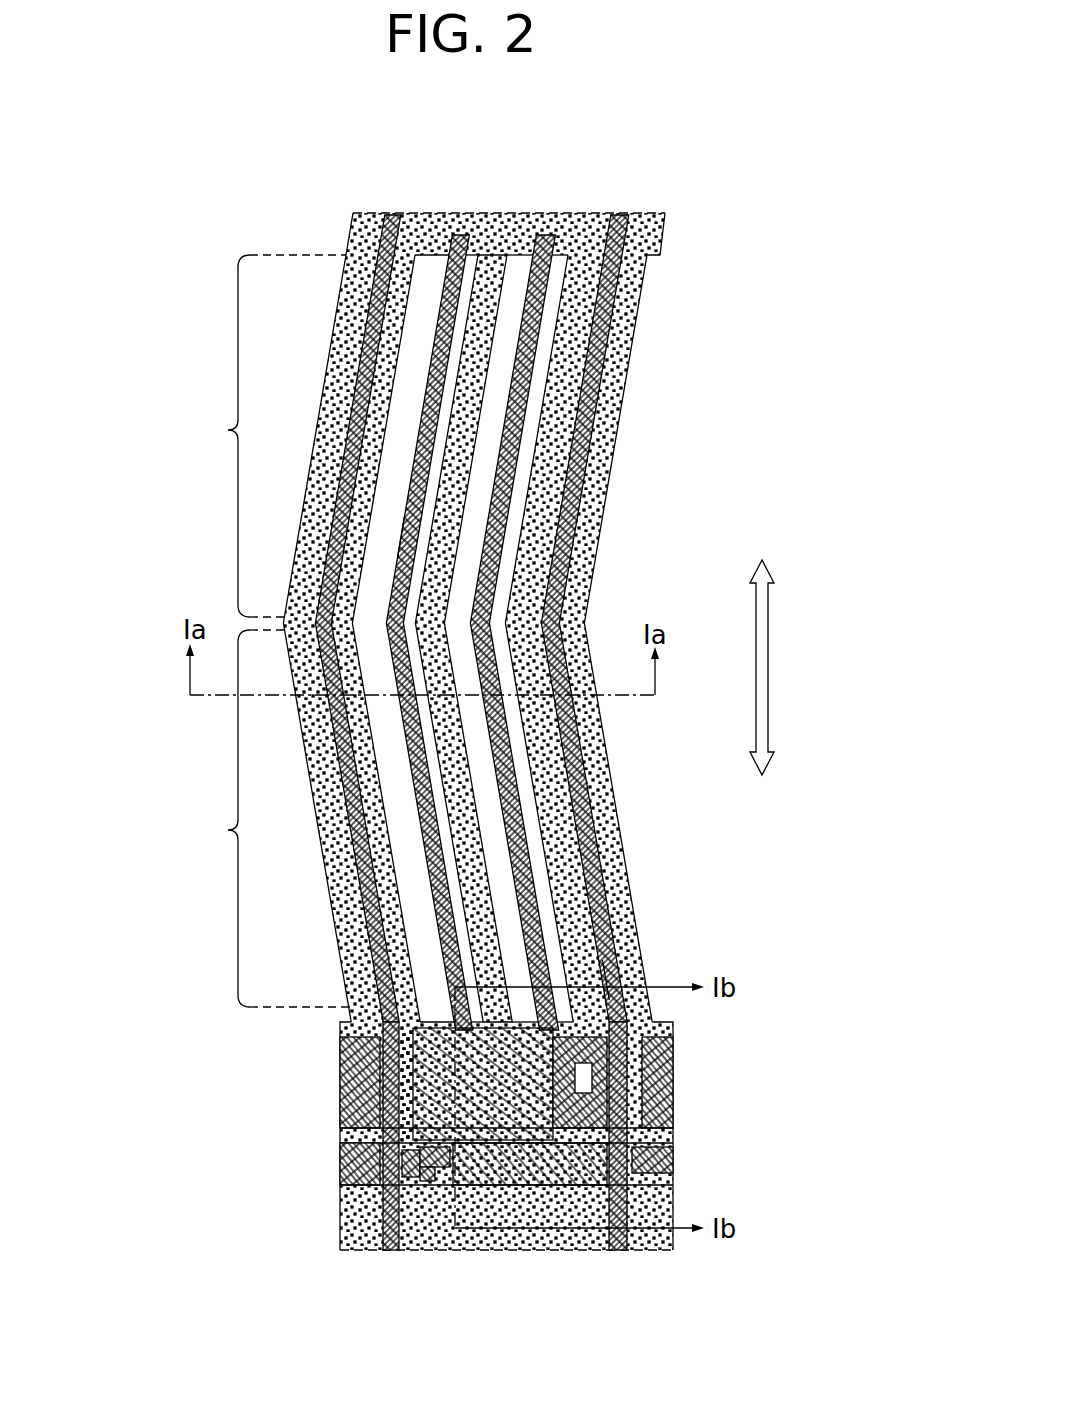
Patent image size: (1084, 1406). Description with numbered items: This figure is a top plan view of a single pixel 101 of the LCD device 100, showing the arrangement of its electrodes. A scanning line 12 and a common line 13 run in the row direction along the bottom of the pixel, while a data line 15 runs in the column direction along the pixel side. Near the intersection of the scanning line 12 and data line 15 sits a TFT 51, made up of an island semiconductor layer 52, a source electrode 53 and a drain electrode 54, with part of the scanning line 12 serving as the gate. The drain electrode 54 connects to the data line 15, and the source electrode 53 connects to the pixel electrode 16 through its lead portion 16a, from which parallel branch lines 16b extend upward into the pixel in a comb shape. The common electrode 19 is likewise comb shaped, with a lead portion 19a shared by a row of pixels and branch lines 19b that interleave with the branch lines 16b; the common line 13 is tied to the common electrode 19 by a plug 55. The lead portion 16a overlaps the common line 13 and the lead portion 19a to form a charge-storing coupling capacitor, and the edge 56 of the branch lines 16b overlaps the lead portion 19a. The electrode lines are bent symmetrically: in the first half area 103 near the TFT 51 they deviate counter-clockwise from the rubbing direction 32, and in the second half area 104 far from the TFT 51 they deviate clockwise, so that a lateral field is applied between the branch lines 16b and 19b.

The LCD device 100 is at (868, 106).
The pixel 101 is at (668, 395).
The common electrode 19 is at (436, 701).
The lead portion of the common electrode 19a is at (348, 235).
The branch lines of the common electrode 19b is at (482, 332).
The data line 15 is at (358, 395).
The edge of the branch lines of the pixel electrode 56 is at (545, 232).
The branch lines of the pixel electrode 16b is at (400, 542).
The second half area 104 is at (259, 436).
The first half area 103 is at (262, 818).
The rubbing direction 32 is at (770, 665).
The plug 55 is at (598, 980).
The pixel electrode 16 is at (398, 1093).
The lead portion of the pixel electrode 16a is at (378, 1065).
The common line 13 is at (342, 1112).
The scanning line 12 is at (342, 1162).
The TFT 51 is at (465, 1262).
The island semiconductor layer 52 is at (452, 1200).
The source electrode 53 is at (480, 1205).
The drain electrode 54 is at (418, 1247).